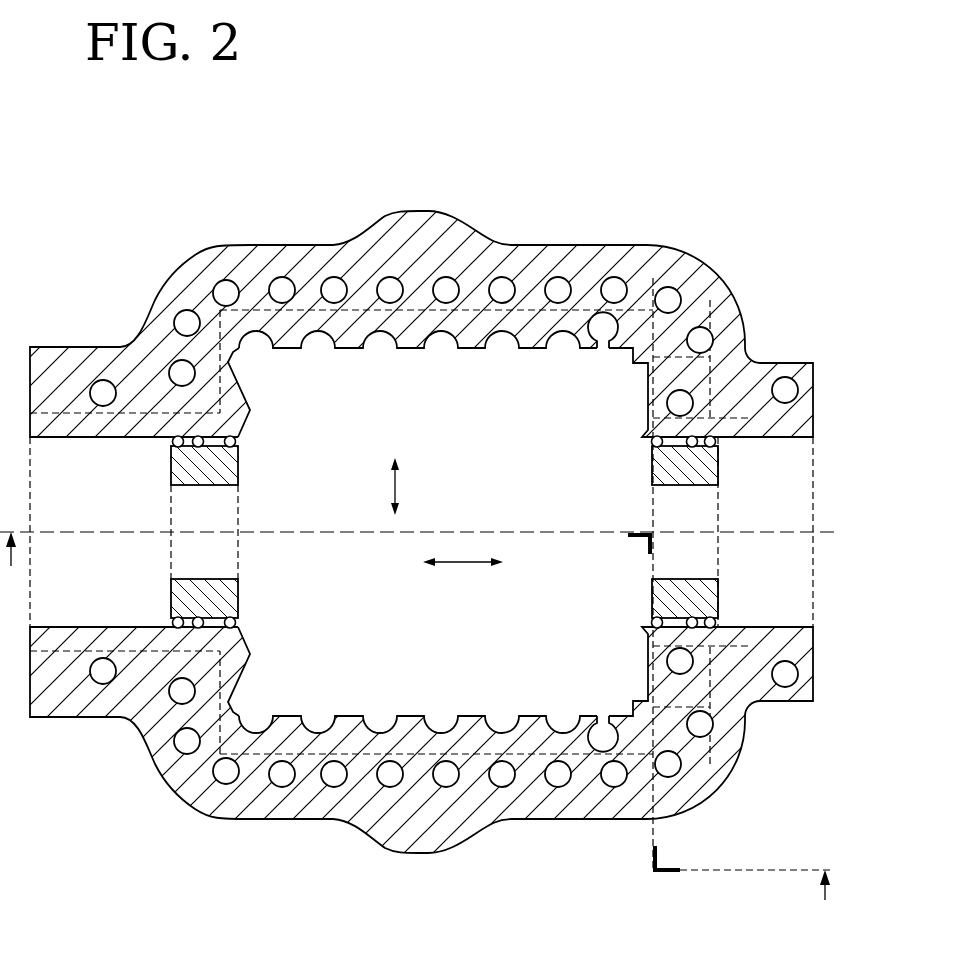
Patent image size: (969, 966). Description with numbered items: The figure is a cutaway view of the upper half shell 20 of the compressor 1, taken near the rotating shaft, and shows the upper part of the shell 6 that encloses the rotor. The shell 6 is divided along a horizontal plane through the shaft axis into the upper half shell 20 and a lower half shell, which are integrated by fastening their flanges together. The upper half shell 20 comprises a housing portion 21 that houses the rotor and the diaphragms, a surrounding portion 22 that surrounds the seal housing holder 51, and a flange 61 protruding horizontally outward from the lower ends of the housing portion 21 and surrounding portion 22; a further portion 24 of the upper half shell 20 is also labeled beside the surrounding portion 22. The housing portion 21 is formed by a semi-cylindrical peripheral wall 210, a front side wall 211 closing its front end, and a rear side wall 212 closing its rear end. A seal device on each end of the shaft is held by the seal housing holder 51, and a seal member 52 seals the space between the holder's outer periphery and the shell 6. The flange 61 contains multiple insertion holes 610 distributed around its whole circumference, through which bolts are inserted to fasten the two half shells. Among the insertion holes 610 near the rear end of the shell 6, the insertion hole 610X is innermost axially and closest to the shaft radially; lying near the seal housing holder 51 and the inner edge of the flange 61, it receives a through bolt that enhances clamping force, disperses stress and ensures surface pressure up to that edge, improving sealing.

The stage device 1 is at (728, 195).
The shell 6 is at (668, 212).
The upper half shell 20 is at (233, 228).
The housing portion 21 is at (294, 244).
The surrounding portion 22 is at (68, 392).
The corner portion 24 is at (750, 352).
The seal housing holder 51 is at (720, 470).
The seal member 52 is at (720, 442).
The flange 61 is at (530, 246).
The peripheral wall 210 is at (474, 306).
The front side wall 211 is at (202, 360).
The rear side wall 212 is at (697, 276).
The insertion holes 610 is at (392, 281).
The insertion hole 610X is at (684, 410).